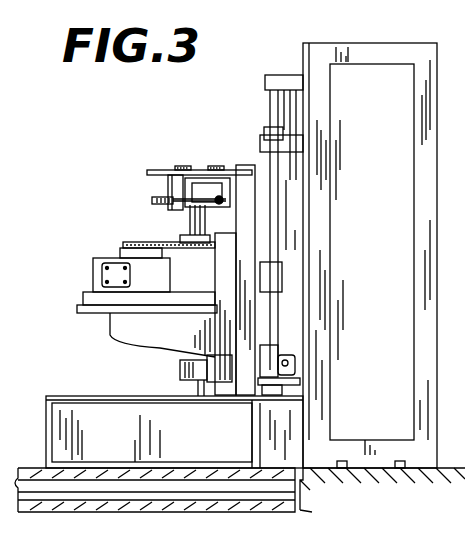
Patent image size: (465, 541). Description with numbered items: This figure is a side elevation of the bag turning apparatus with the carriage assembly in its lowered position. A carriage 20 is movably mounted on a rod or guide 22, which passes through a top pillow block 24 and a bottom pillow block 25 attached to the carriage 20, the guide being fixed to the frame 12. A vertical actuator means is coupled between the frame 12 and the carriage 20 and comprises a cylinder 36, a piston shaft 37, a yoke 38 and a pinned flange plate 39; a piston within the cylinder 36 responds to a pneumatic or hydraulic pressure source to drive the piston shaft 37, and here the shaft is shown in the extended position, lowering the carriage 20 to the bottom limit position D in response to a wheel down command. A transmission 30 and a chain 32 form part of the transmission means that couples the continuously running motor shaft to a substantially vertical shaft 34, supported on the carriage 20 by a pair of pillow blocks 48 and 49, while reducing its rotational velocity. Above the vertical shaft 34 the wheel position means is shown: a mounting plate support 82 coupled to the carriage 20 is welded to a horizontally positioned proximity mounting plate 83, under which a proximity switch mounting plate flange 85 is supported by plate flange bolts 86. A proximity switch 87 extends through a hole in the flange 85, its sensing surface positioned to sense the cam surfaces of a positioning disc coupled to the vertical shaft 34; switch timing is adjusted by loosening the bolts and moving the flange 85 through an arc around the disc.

The frame 12 is at (336, 46).
The carriage 20 is at (150, 324).
The guide 22 is at (265, 135).
The top pillow block 24 is at (272, 277).
The bottom pillow block 25 is at (272, 347).
The transmission 30 is at (165, 284).
The chain 32 is at (123, 245).
The substantially vertical shaft 34 is at (195, 390).
The cylinder 36 is at (268, 92).
The piston shaft 37 is at (295, 240).
The yoke 38 is at (292, 360).
The pinned flange plate 39 is at (298, 381).
The pillow block 48 is at (178, 312).
The pillow block 49 is at (180, 368).
The mounting plate support 82 is at (243, 178).
The proximity mounting plate 83 is at (148, 170).
The proximity switch mounting plate flange 85 is at (224, 186).
The plate flange bolts 86 is at (183, 168).
The proximity switch 87 is at (156, 196).
The bottom limit position D is at (32, 432).